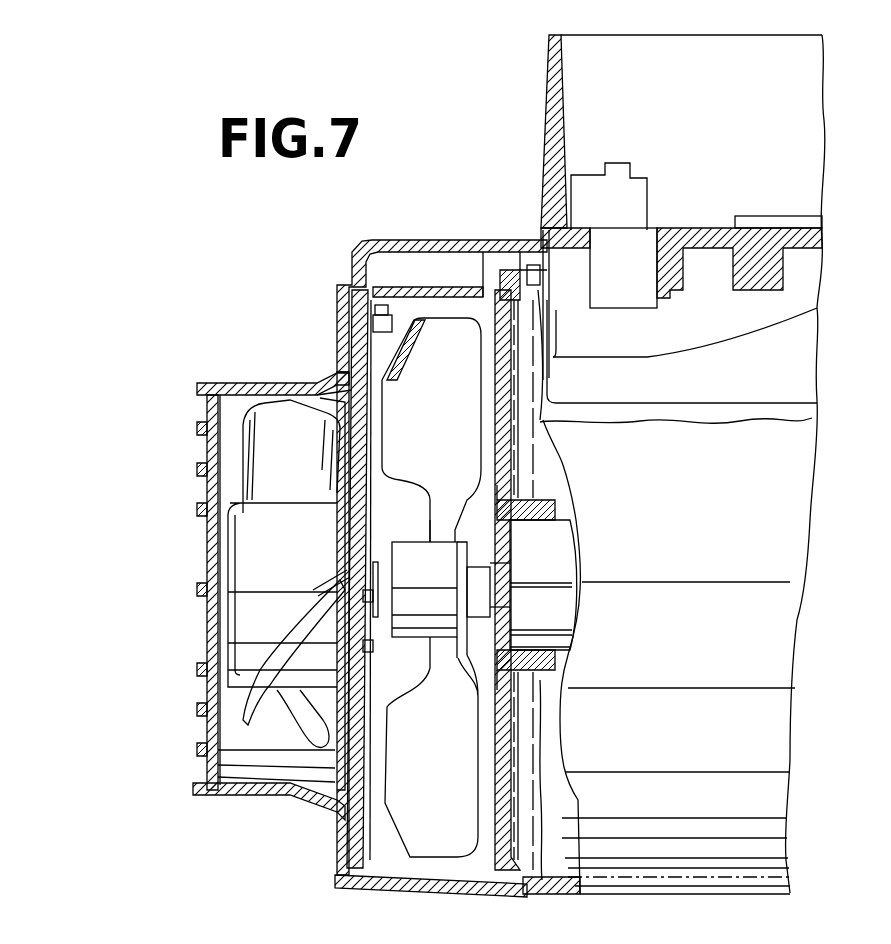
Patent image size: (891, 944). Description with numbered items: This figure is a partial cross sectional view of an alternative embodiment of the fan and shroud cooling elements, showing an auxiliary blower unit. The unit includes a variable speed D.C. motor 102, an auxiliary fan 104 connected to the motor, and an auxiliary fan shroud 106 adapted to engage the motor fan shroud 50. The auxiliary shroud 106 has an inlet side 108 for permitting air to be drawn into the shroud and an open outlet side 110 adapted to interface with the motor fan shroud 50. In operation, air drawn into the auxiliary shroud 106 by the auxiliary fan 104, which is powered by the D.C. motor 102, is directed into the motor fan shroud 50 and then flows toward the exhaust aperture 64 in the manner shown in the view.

The fan shroud 50 is at (417, 238).
The exhaust aperture 64 is at (511, 262).
The variable speed D.C. motor 102 is at (360, 530).
The auxiliary fan 104 is at (308, 460).
The auxiliary fan shroud 106 is at (245, 383).
The inlet side 108 is at (183, 463).
The open outlet side 110 is at (318, 380).